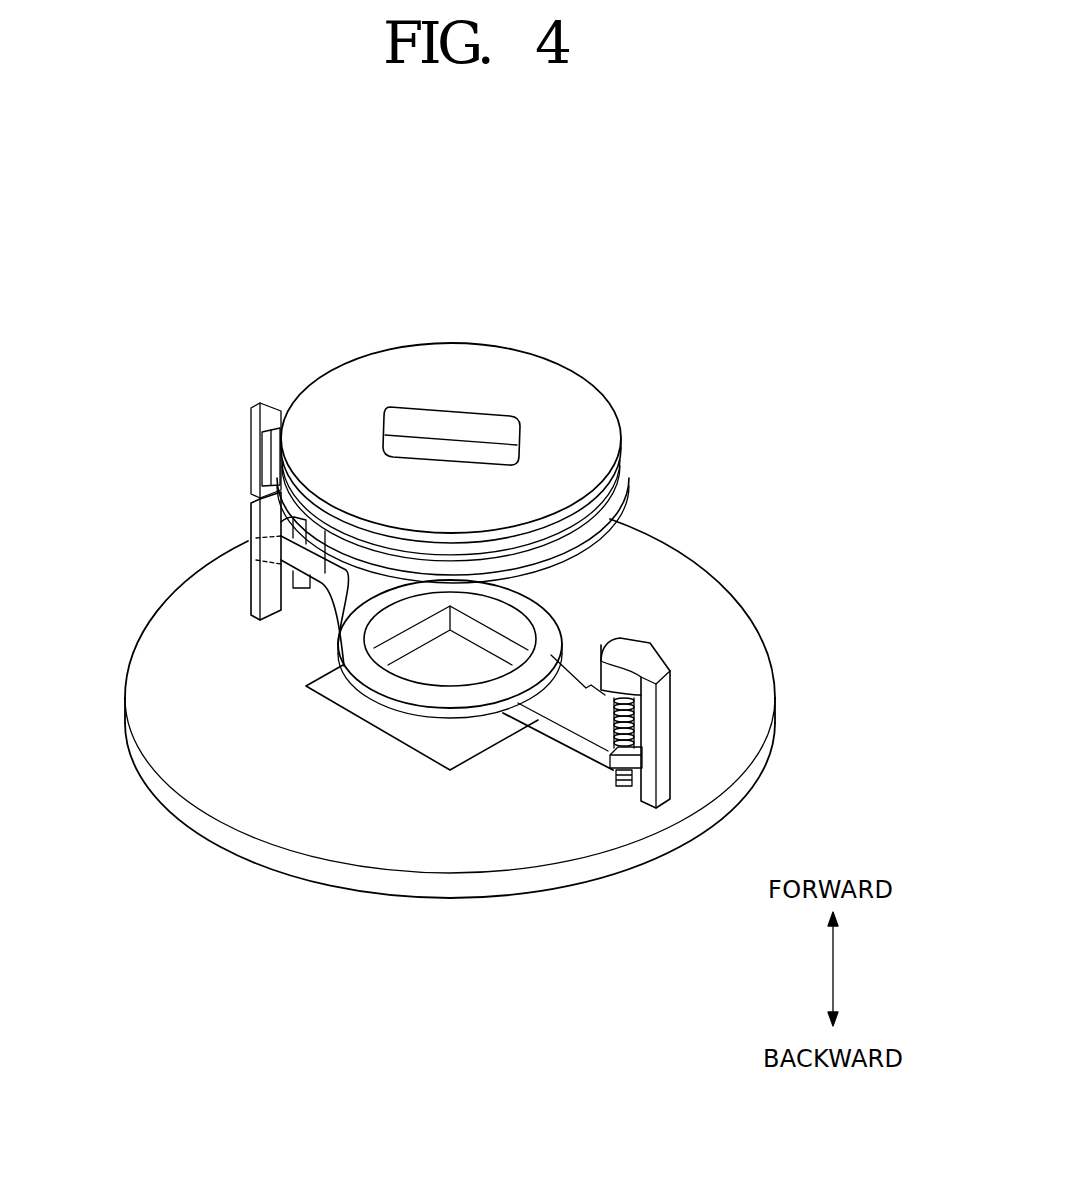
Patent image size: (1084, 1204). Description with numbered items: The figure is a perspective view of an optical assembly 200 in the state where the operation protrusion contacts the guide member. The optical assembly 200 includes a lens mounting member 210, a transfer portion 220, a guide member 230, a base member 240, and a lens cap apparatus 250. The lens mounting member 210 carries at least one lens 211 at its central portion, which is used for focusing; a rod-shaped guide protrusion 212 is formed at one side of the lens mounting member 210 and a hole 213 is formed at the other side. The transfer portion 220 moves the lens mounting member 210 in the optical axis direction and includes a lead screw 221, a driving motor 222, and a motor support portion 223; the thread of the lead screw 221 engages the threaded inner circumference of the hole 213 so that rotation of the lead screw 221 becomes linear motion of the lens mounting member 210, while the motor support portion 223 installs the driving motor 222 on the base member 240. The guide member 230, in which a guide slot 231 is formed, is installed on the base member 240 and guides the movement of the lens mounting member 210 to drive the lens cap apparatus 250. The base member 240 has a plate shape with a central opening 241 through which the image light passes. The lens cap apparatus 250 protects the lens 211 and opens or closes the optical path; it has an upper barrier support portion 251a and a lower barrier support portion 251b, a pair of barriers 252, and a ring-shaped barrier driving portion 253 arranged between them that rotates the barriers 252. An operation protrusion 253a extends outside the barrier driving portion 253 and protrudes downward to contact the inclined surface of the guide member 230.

The optical assembly 200 is at (707, 267).
The lens mounting member 210 is at (456, 737).
The lens 211 is at (414, 668).
The guide protrusion 212 is at (298, 598).
The hole 213 is at (604, 770).
The transfer portion 220 is at (770, 706).
The lead screw 221 is at (637, 724).
The driving motor 222 is at (637, 653).
The motor support portion 223 is at (669, 732).
The guide member 230 is at (217, 579).
The guide slot 231 is at (292, 543).
The base member 240 is at (416, 711).
The opening 241 is at (360, 706).
The lens cap apparatus 250 is at (432, 433).
The upper barrier support portion 251a is at (622, 462).
The lower barrier support portion 251b is at (621, 492).
The barriers 252 is at (483, 450).
The barrier driving portion 253 is at (566, 523).
The operation protrusion 253a is at (262, 493).